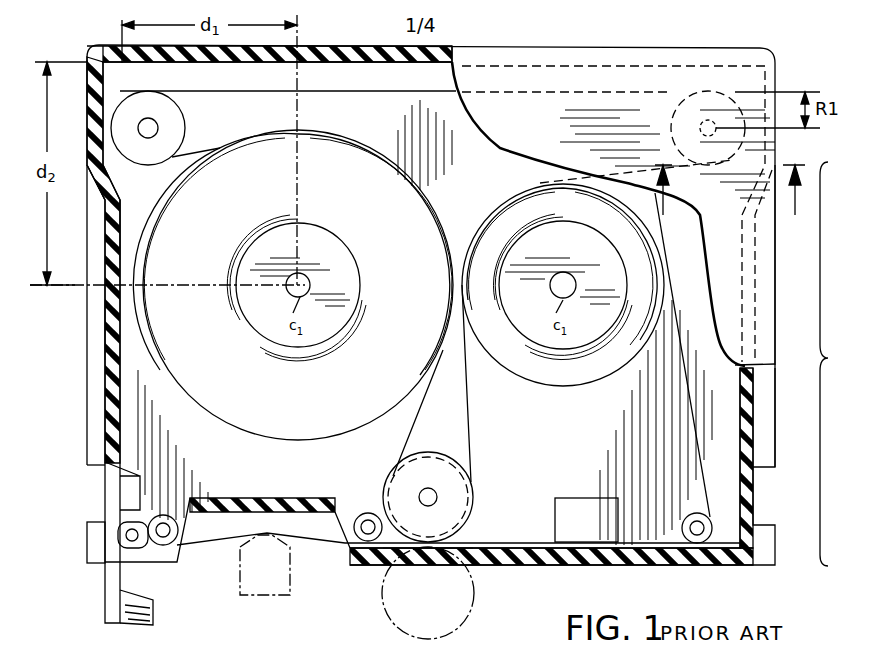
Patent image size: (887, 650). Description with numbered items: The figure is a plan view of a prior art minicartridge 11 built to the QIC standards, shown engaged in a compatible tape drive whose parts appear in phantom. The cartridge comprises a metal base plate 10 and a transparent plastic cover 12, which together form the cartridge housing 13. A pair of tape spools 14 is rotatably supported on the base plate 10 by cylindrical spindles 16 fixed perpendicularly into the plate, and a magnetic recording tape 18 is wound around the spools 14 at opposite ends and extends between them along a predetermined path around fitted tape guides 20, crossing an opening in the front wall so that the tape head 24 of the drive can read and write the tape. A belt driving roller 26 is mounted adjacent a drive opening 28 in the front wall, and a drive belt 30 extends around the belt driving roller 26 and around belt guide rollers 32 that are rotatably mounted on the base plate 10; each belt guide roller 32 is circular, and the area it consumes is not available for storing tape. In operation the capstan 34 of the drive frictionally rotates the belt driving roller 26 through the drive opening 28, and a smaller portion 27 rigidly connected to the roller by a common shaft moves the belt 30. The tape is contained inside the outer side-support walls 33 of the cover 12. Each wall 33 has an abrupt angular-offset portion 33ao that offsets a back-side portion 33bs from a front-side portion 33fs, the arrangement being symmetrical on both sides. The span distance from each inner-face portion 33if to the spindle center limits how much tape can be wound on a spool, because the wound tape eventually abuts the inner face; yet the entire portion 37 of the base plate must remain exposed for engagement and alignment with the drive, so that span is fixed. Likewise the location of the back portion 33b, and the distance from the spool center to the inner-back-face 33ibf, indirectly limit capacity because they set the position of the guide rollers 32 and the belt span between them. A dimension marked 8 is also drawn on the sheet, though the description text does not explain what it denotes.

The clearance gap 8 is at (730, 203).
The metal base plate 10 is at (762, 393).
The minicartridge 11 is at (575, 45).
The transparent plastic cover 12 is at (750, 146).
The cartridge housing 13 is at (777, 257).
The tape spools 14 is at (308, 233).
The cylindrical spindles 16 is at (310, 278).
The magnetic recording tape 18 is at (306, 543).
The tape guides 20 is at (163, 543).
The tape head 24 is at (268, 595).
The belt driving roller 26 is at (453, 488).
The smaller portion 27 is at (418, 454).
The drive opening 28 is at (467, 557).
The drive belt 30 is at (426, 93).
The belt guide rollers 32 is at (175, 122).
The outer side-support walls 33 is at (452, 47).
The back portion 33b is at (392, 52).
The back-side portion 33bs is at (90, 80).
The inner-back-face 33ibf is at (373, 66).
The inner-face portion 33if is at (122, 232).
The angular-offset portion 33ao is at (90, 207).
The front-side portion 33fs is at (110, 338).
The capstan 34 is at (382, 593).
The portion of the base plate 37 is at (838, 364).